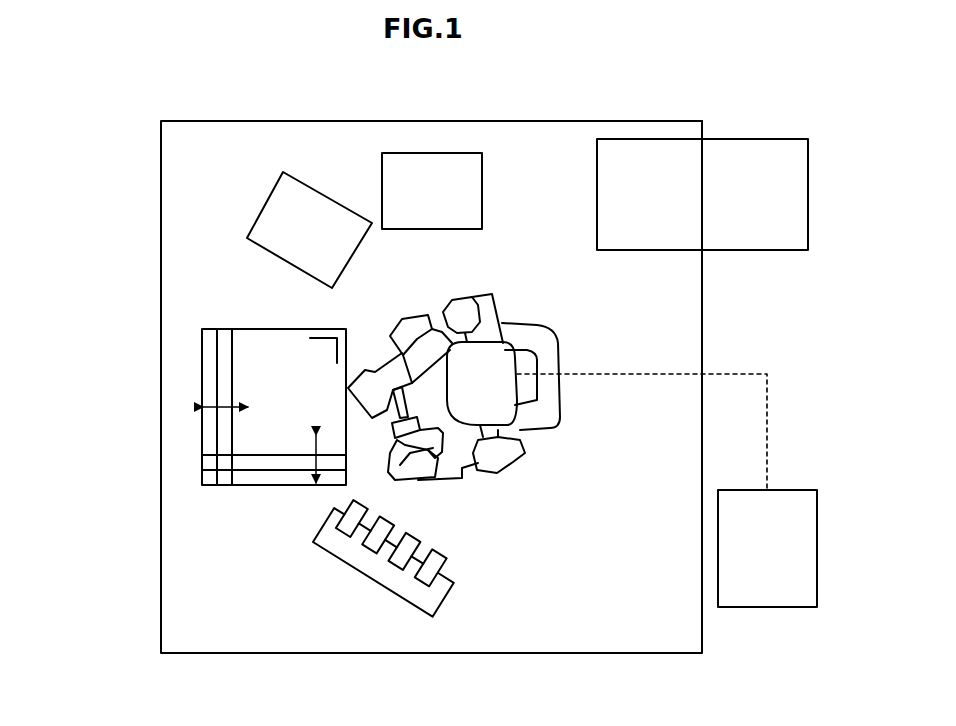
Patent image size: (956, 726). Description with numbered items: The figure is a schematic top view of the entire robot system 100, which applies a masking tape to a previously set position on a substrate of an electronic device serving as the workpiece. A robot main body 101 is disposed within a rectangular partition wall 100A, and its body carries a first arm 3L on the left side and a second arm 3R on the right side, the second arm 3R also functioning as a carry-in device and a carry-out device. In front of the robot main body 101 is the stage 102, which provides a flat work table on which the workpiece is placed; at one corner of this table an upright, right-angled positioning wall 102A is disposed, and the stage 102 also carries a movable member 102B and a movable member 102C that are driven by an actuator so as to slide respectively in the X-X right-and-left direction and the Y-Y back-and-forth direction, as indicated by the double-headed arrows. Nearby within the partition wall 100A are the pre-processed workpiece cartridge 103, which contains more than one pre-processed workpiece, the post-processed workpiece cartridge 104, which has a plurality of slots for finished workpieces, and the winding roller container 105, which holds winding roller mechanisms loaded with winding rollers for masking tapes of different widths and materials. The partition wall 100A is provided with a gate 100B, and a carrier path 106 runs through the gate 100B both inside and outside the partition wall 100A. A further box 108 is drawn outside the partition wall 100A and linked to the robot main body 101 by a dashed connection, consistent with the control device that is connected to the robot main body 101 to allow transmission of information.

The robot system 100 is at (140, 481).
The partition wall 100A is at (160, 347).
The gate 100B is at (703, 129).
The robot main body 101 is at (493, 403).
The second arm 3R is at (460, 307).
The first arm 3L is at (466, 458).
The stage 102 is at (297, 412).
The positioning wall 102A is at (330, 335).
The movable member 102B is at (267, 483).
The movable member 102C is at (227, 488).
The pre-processed workpiece cartridge 103 is at (268, 228).
The post-processed workpiece cartridge 104 is at (448, 179).
The winding roller container 105 is at (358, 556).
The carrier path 106 is at (617, 153).
The external device 108 is at (766, 598).